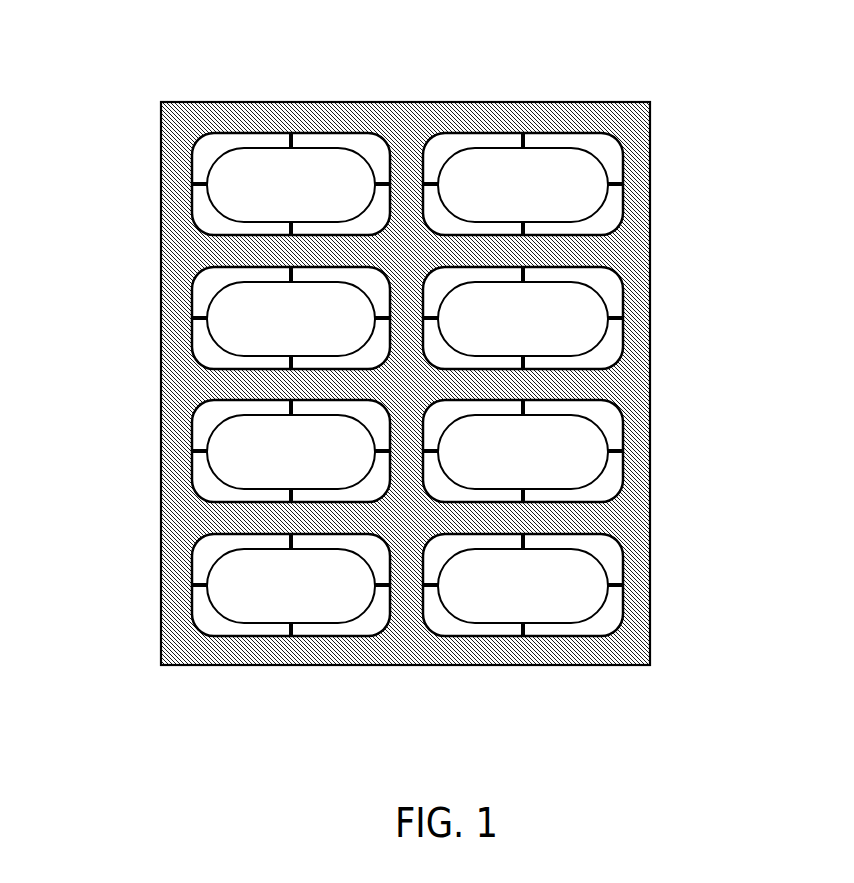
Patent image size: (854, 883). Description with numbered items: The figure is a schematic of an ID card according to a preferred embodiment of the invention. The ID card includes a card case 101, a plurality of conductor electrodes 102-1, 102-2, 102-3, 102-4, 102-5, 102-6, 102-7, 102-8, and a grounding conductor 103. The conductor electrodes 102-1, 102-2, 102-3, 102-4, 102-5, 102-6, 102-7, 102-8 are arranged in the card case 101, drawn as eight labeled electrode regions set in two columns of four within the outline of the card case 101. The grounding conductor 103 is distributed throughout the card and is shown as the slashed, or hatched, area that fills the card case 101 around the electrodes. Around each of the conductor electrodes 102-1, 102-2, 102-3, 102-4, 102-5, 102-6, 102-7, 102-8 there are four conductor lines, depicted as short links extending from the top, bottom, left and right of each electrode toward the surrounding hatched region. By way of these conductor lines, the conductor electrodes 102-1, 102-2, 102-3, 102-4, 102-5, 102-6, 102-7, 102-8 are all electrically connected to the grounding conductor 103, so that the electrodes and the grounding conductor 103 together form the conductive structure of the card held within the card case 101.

The card case 101 is at (380, 102).
The conductor electrode 102-1 is at (230, 155).
The conductor electrode 102-2 is at (230, 289).
The conductor electrode 102-3 is at (230, 422).
The conductor electrode 102-4 is at (230, 556).
The conductor electrode 102-5 is at (583, 167).
The conductor electrode 102-6 is at (578, 302).
The conductor electrode 102-7 is at (579, 431).
The conductor electrode 102-8 is at (578, 563).
The grounding conductor 103 is at (618, 246).